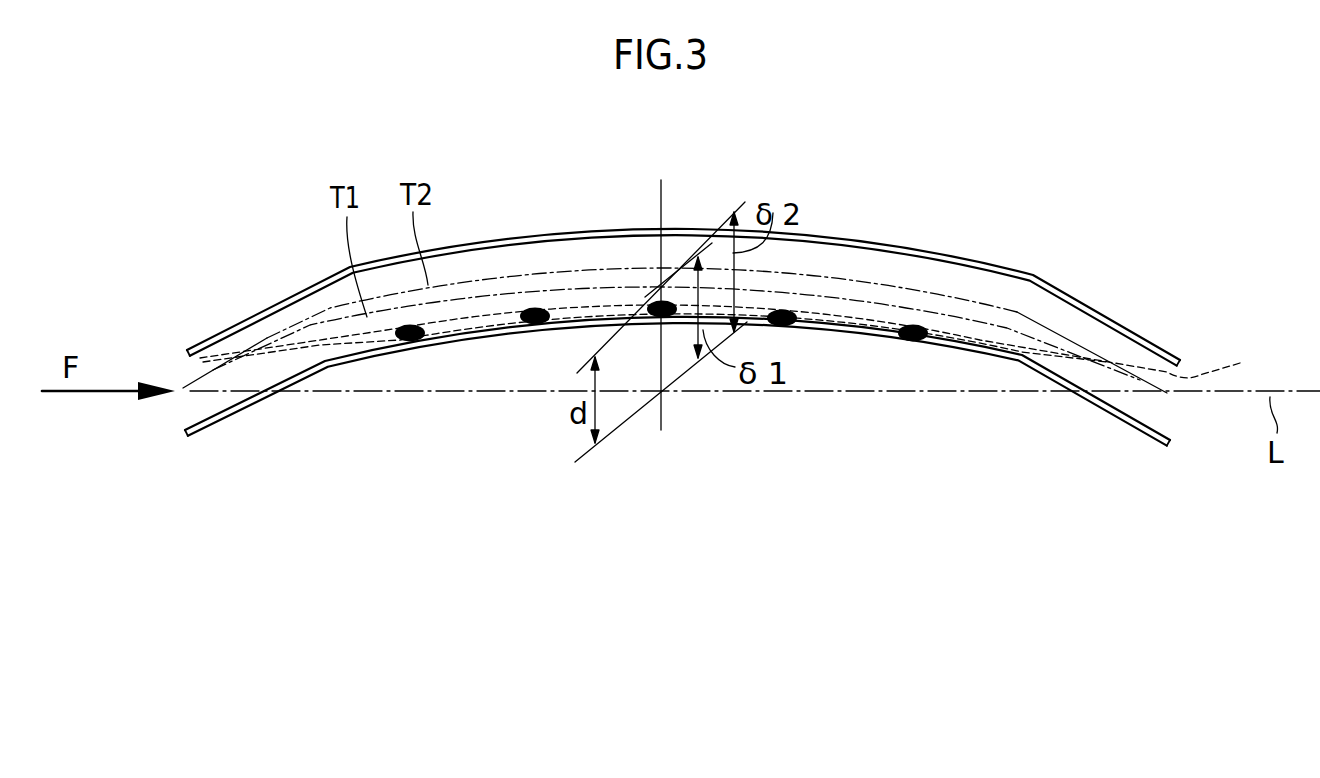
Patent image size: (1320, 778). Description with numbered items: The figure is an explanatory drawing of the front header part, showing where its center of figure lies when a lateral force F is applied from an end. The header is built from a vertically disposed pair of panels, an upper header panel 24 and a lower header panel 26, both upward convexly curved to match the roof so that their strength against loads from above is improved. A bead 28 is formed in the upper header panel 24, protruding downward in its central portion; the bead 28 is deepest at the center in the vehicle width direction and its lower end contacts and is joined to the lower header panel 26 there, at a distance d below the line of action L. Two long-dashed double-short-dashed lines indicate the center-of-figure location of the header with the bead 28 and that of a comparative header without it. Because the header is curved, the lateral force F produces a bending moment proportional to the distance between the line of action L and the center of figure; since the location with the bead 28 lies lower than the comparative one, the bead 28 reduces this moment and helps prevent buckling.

The upper header panel 24 is at (948, 252).
The lower header panel 26 is at (1137, 433).
The bead 28 is at (742, 345).